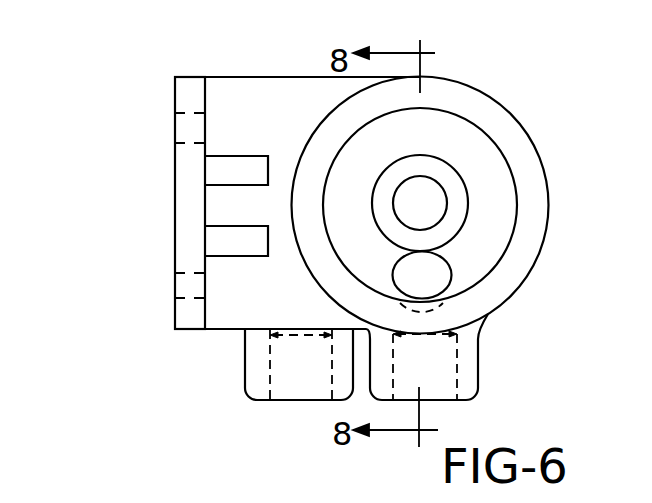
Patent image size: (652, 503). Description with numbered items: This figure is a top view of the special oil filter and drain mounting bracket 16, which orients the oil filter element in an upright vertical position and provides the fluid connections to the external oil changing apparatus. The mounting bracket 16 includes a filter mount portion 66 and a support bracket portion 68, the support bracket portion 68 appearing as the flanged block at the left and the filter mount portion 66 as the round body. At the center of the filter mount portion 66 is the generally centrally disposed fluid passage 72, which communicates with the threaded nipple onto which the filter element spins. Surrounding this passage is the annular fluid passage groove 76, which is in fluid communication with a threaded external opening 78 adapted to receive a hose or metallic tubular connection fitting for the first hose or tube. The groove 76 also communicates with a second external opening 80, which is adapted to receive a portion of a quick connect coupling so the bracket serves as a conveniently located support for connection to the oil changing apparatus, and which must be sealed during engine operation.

The oil filter and drain mounting bracket 16 is at (241, 358).
The filter mount portion 66 is at (480, 91).
The support bracket portion 68 is at (209, 101).
The fluid passage 72 is at (447, 203).
The annular fluid passage groove 76 is at (513, 226).
The threaded external opening 78 is at (447, 277).
The second external opening 80 is at (445, 370).